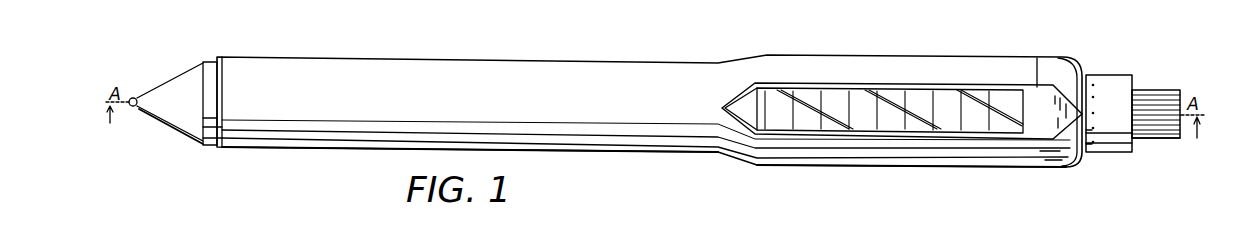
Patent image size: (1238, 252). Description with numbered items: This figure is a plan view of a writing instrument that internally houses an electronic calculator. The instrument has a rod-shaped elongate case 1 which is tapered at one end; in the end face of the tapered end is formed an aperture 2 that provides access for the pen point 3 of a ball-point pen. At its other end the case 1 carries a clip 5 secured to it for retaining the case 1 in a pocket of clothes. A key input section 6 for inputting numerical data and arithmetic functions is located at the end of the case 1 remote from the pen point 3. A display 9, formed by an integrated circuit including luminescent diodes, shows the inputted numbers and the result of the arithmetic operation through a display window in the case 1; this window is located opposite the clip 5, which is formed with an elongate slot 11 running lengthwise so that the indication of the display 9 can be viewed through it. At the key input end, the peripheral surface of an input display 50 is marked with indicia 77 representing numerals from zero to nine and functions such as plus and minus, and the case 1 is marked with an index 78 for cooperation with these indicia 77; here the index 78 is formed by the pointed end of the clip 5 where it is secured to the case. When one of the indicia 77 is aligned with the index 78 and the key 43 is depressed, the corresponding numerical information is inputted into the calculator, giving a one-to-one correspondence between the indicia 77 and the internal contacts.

The case 1 is at (340, 151).
The aperture 2 is at (138, 96).
The pen point 3 is at (135, 110).
The clip 5 is at (1042, 120).
The key input section 6 is at (1161, 148).
The display 9 is at (863, 120).
The elongate slot 11 is at (954, 128).
The key 43 is at (1160, 97).
The input display 50 is at (1123, 82).
The indicia 77 is at (1105, 153).
The index 78 is at (1080, 73).